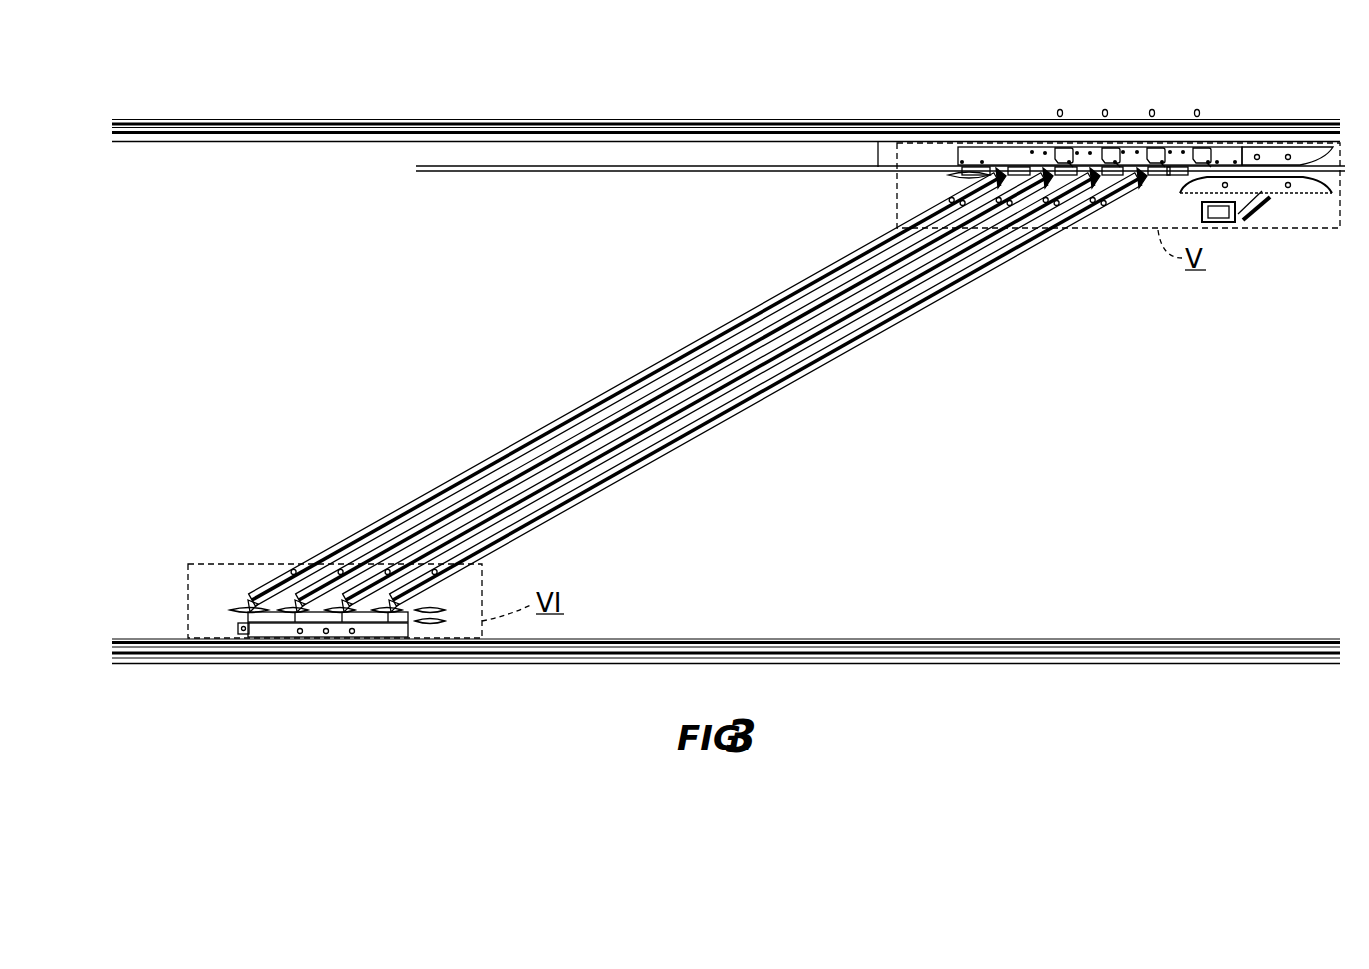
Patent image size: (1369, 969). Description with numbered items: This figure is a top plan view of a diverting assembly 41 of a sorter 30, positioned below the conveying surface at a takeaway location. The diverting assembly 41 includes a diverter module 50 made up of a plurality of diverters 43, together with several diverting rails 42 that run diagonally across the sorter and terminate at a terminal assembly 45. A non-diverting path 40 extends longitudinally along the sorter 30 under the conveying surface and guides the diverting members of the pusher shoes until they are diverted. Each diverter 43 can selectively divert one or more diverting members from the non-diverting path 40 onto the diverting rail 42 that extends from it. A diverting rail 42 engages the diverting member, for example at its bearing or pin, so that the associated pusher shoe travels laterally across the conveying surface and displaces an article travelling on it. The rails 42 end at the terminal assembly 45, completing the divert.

The sorter 30 is at (803, 90).
The non-diverting path 40 is at (879, 121).
The diverting assembly 41 is at (798, 385).
The diverting rail 42 is at (868, 259).
The diverter 43 is at (1063, 147).
The terminal assembly 45 is at (388, 638).
The diverter module 50 is at (1020, 119).